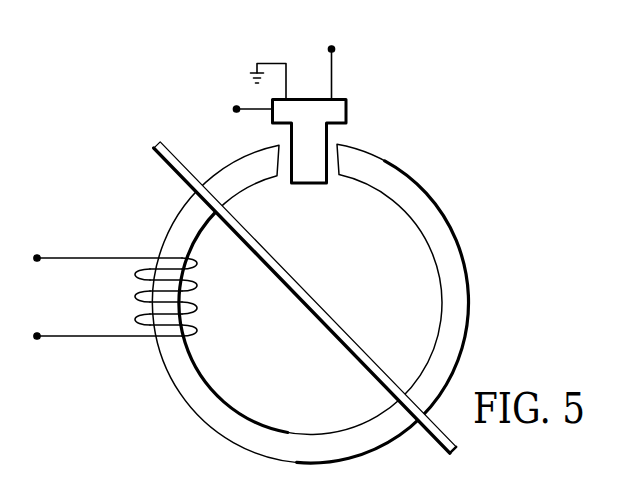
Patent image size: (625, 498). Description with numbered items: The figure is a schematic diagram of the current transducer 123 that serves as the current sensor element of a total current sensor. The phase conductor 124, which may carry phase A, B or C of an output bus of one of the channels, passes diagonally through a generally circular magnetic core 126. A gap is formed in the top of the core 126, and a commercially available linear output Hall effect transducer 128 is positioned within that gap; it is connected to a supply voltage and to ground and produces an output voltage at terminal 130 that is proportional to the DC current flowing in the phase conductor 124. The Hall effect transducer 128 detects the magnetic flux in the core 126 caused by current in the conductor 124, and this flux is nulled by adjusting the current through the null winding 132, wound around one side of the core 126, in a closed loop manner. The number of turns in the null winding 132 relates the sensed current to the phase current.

The current transducer 123 is at (287, 368).
The phase conductor 124 is at (322, 311).
The magnetic core 126 is at (452, 285).
The linear output Hall effect transducer 128 is at (346, 103).
The terminal 130 is at (236, 109).
The null winding 132 is at (143, 297).